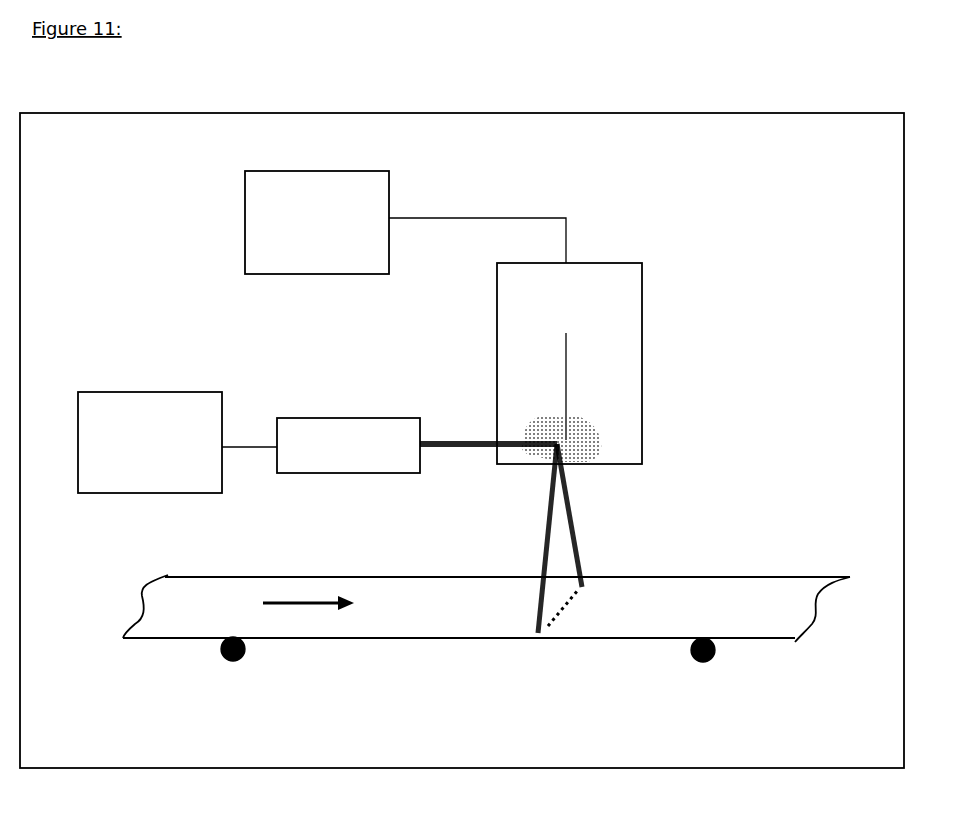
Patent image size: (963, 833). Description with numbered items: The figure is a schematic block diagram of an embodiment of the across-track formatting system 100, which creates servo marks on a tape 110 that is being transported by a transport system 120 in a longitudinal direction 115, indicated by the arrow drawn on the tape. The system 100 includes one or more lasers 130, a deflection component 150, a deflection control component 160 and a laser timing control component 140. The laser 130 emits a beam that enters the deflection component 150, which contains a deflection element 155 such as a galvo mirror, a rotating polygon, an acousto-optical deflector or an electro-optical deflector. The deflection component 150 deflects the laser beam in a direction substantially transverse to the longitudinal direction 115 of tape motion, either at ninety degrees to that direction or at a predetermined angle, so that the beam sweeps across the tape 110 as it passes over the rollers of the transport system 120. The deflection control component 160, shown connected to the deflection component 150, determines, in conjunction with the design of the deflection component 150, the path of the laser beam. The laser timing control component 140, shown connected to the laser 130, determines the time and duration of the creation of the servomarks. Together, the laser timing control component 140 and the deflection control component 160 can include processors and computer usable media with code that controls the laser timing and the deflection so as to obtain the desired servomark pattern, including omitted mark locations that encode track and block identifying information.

The across-track formatting system 100 is at (662, 110).
The tape 110 is at (703, 593).
The longitudinal direction 115 is at (310, 600).
The transport system 120 is at (690, 654).
The laser 130 is at (328, 412).
The laser timing control component 140 is at (136, 384).
The deflection component 150 is at (648, 307).
The deflection element 155 is at (597, 438).
The deflection control component 160 is at (240, 218).